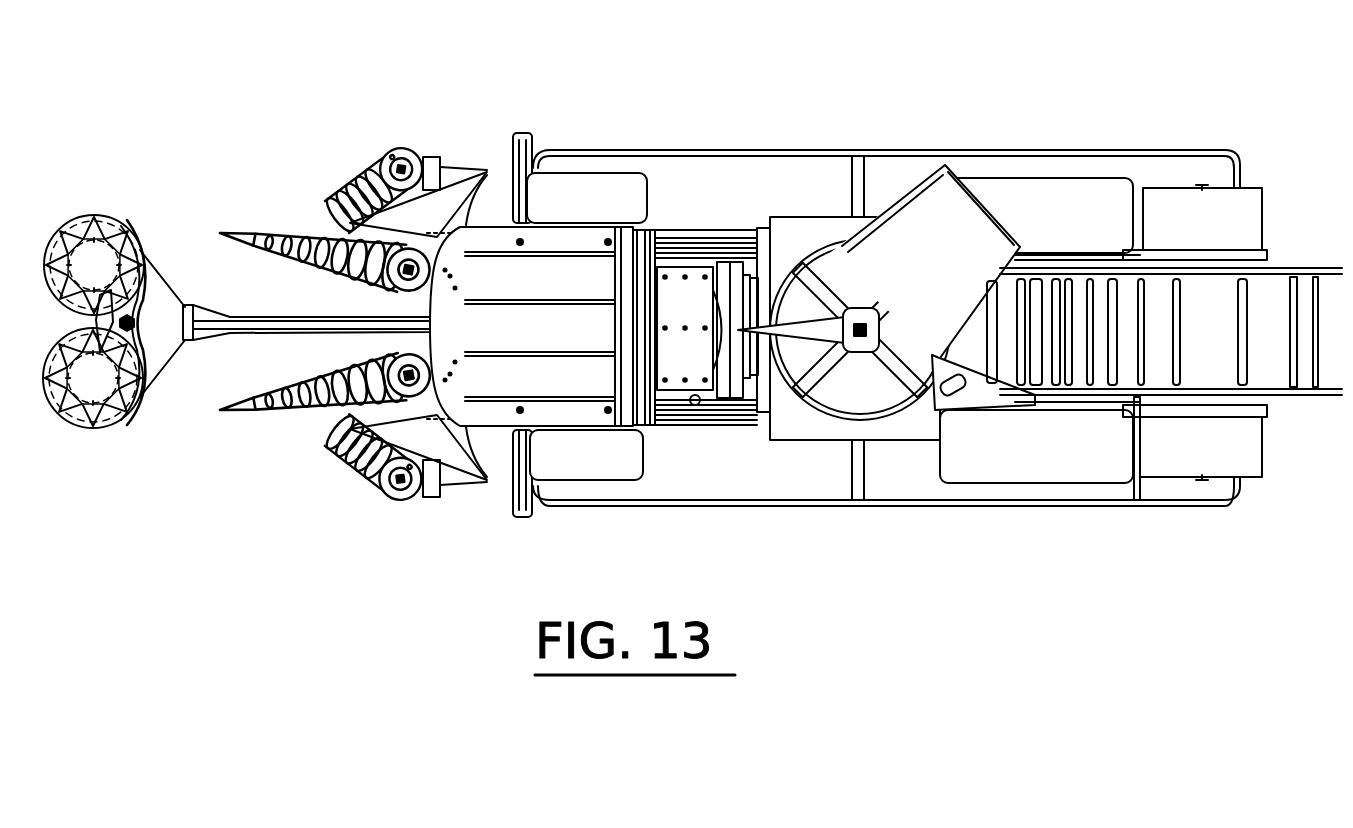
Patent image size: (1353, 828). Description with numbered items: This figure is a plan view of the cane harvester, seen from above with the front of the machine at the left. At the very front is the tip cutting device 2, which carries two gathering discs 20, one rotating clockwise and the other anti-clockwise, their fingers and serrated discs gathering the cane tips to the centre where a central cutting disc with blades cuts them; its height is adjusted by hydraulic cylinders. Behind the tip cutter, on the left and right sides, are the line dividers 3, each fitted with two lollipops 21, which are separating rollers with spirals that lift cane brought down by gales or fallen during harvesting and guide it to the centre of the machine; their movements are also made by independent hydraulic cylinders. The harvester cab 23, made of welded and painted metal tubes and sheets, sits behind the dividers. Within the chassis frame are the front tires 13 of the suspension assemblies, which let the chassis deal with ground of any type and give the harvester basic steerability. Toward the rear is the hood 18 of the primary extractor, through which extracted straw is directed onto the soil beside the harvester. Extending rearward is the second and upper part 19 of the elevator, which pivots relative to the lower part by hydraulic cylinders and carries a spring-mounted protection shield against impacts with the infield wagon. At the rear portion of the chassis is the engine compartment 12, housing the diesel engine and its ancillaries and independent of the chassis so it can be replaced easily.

The tip cutting device 2 is at (147, 251).
The line divider 3 is at (402, 150).
The engine compartment 12 is at (1238, 452).
The front tires 13 is at (588, 192).
The hood 18 is at (953, 263).
The second and upper part of the elevator 19 is at (1283, 292).
The gathering disc 20 is at (85, 232).
The lollipop 21 is at (347, 188).
The harvester cab 23 is at (580, 333).